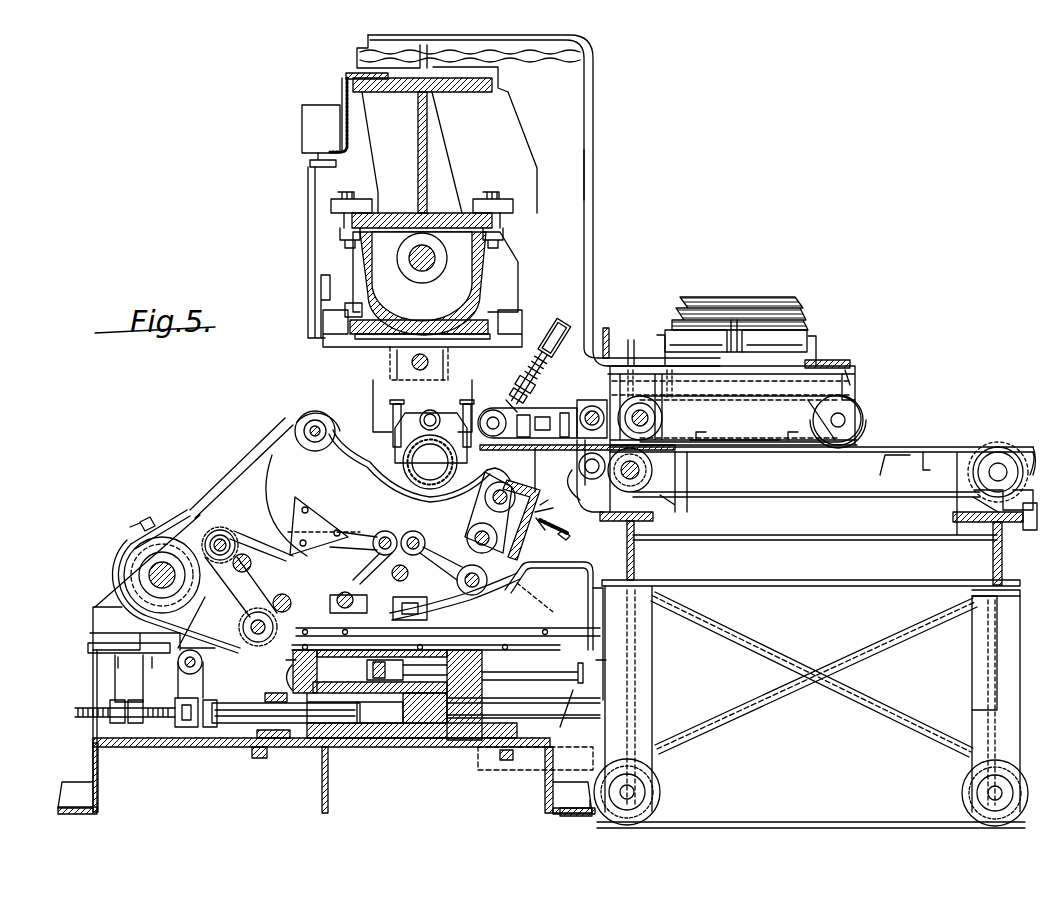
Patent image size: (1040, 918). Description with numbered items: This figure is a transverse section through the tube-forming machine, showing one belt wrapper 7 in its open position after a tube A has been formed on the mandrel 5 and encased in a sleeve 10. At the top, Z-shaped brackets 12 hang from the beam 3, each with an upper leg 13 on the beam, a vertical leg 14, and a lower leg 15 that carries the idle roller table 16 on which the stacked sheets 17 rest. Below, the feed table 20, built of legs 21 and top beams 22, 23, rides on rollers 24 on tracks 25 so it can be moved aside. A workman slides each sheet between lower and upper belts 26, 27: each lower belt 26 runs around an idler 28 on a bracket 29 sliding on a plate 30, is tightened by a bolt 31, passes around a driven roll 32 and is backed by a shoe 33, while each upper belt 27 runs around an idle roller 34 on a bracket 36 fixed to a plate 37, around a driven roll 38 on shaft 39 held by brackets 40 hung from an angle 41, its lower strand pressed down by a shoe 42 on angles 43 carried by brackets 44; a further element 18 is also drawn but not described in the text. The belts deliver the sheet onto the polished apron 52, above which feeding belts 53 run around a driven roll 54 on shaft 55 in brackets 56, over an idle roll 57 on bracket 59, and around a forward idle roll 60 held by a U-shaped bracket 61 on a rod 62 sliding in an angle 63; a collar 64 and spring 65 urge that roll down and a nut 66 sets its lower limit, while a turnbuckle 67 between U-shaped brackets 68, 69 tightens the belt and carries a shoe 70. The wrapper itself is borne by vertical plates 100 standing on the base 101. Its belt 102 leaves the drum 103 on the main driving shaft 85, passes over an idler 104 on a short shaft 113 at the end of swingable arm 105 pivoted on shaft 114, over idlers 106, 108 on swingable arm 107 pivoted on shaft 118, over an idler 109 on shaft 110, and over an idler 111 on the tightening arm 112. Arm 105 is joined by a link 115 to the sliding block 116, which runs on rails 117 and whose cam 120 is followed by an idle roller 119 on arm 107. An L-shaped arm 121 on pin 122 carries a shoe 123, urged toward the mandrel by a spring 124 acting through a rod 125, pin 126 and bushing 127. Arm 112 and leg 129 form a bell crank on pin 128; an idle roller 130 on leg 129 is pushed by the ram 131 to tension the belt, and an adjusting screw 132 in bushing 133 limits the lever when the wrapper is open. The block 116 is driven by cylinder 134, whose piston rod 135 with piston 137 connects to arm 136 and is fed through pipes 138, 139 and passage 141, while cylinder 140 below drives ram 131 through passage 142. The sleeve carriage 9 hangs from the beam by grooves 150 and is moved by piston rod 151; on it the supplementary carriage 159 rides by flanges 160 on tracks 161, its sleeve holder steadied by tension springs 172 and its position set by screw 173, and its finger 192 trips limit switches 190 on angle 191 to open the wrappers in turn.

The beam 3 is at (429, 130).
The mandrel 5 is at (430, 462).
The belt wrapper 7 is at (298, 409).
The carriage 9 is at (497, 268).
The sleeve 10 is at (431, 436).
The bracket 12 is at (601, 54).
The upper horizontal leg 13 is at (500, 44).
The vertical leg 14 is at (594, 148).
The horizontal lower leg 15 is at (853, 376).
The idle roller table 16 is at (807, 337).
The sheets 17 is at (800, 308).
The roller 18 is at (640, 476).
The feed table 20 is at (967, 663).
The legs 21 is at (653, 657).
The top beam 22 is at (634, 556).
The top beam 23 is at (992, 560).
The rollers 24 is at (662, 782).
The tracks 25 is at (832, 822).
The lower belts 26 is at (826, 500).
The upper belts 27 is at (863, 410).
The idler 28 is at (996, 458).
The bracket 29 is at (982, 497).
The plate 30 is at (952, 520).
The threaded bolt 31 is at (1028, 530).
The driven roll 32 is at (673, 497).
The plate-like shoe 33 is at (882, 455).
The idle roller 34 is at (864, 421).
The bracket 36 is at (855, 390).
The plate 37 is at (845, 357).
The driven roll 38 is at (662, 418).
The driven shaft 39 is at (662, 432).
The brackets 40 is at (668, 378).
The angle 41 is at (634, 362).
The plate-like shoe 42 is at (735, 429).
The angles 43 is at (747, 428).
The brackets 44 is at (705, 397).
The apron 52 is at (520, 445).
The feeding belts 53 is at (562, 412).
The driven roll 54 is at (577, 452).
The driven shaft 55 is at (580, 468).
The brackets 56 is at (606, 360).
The idle roll 57 is at (578, 480).
The bracket 59 is at (590, 520).
The idle roll 60 is at (496, 438).
The U-shaped bracket 61 is at (512, 402).
The rod 62 is at (523, 376).
The angle 63 is at (547, 330).
The collar 64 is at (538, 362).
The spring 65 is at (538, 352).
The adjusting nut 66 is at (556, 335).
The turnbuckle 67 is at (544, 416).
The U-shaped bracket 68 is at (578, 400).
The U-shaped bracket 69 is at (527, 414).
The plate-like shoe 70 is at (536, 462).
The main driving shaft 85 is at (150, 573).
The vertical plates 100 is at (95, 617).
The platform or base 101 is at (385, 747).
The belt 102 is at (170, 513).
The driving wheel or drum 103 is at (135, 550).
The idler 104 is at (326, 417).
The swingable arm 105 is at (297, 478).
The idler 106 is at (505, 486).
The swingable arm 107 is at (480, 514).
The idler 108 is at (467, 537).
The idler 109 is at (226, 530).
The shaft 110 is at (228, 547).
The idler 111 is at (258, 612).
The belt tightening arm 112 is at (243, 625).
The short shaft 113 is at (314, 420).
The shaft 114 is at (385, 532).
The link 115 is at (398, 580).
The horizontally movable block 116 is at (445, 606).
The rails 117 is at (392, 604).
The shaft 118 is at (413, 530).
The idle roller 119 is at (461, 588).
The cam 120 is at (519, 568).
The L-shaped arm 121 is at (518, 553).
The pin 122 is at (517, 600).
The shoe 123 is at (490, 476).
The spring 124 is at (549, 522).
The rod 125 is at (570, 537).
The pin 126 is at (533, 531).
The bushing 127 is at (541, 512).
The pin 128 is at (204, 662).
The leg 129 is at (203, 684).
The idle roller 130 is at (183, 728).
The pressure ram 131 is at (209, 728).
The adjusting screw 132 is at (95, 702).
The bushing 133 is at (133, 726).
The cylinder 134 is at (342, 656).
The piston rod 135 is at (505, 670).
The upwardly extending arm 136 is at (600, 610).
The piston 137 is at (367, 664).
The pipe 138 is at (514, 712).
The pipe 139 is at (285, 668).
The cylinder 140 is at (358, 748).
The passage 141 is at (478, 701).
The passage 142 is at (430, 740).
The grooves 150 is at (353, 220).
The piston rod 151 is at (423, 270).
The supplementary carriage 159 is at (362, 367).
The elongate flanges 160 is at (350, 322).
The tracks 161 is at (360, 307).
The tension springs 172 is at (393, 436).
The screw 173 is at (413, 365).
The electrical limit switches 190 is at (315, 108).
The angle 191 is at (347, 76).
The finger 192 is at (307, 246).
The tube A is at (408, 489).